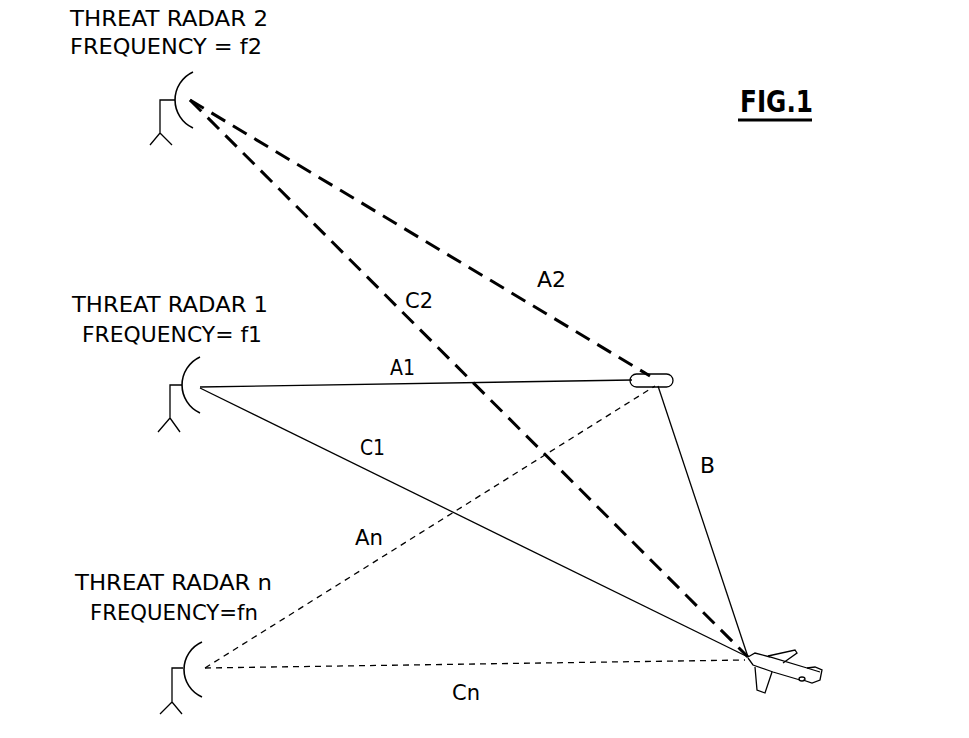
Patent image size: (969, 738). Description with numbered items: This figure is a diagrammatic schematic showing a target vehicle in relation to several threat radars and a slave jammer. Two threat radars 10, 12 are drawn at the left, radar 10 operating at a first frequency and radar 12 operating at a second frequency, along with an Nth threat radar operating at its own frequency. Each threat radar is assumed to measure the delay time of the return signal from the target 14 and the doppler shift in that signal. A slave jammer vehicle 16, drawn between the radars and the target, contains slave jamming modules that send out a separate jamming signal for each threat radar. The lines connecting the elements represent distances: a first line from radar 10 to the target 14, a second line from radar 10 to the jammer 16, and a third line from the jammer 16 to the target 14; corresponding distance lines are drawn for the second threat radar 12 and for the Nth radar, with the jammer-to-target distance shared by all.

The threat radar 10 is at (173, 392).
The threat radar 12 is at (165, 107).
The target 14 is at (747, 672).
The slave jammer vehicle 16 is at (667, 410).